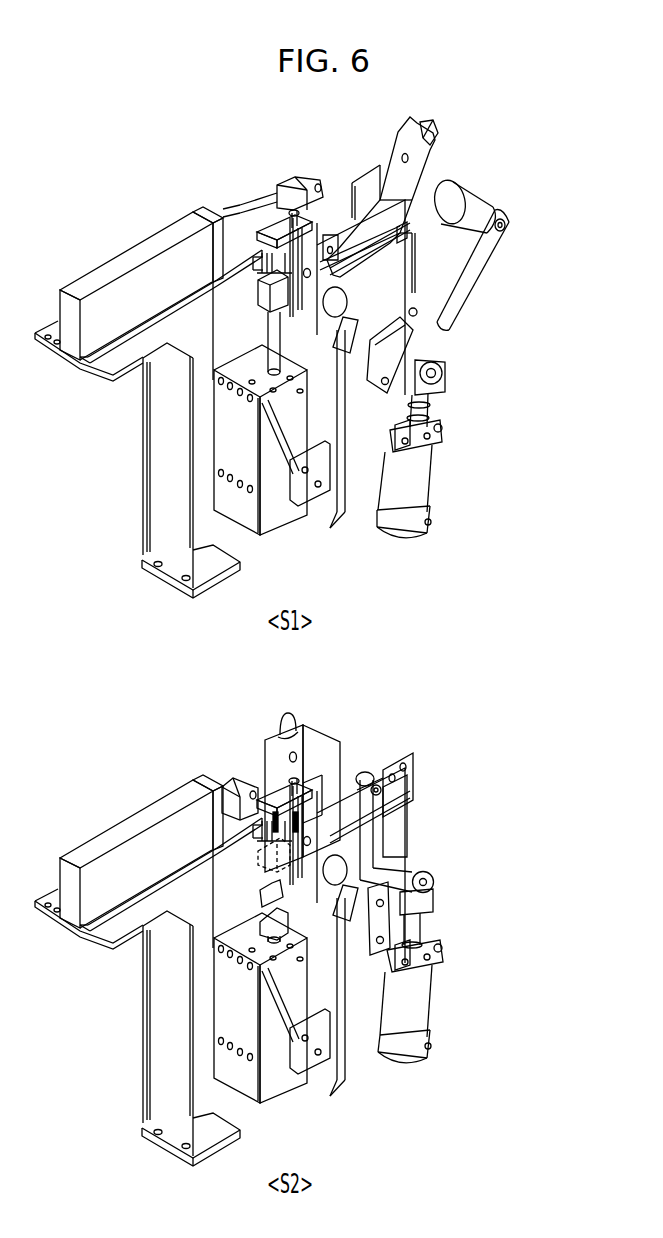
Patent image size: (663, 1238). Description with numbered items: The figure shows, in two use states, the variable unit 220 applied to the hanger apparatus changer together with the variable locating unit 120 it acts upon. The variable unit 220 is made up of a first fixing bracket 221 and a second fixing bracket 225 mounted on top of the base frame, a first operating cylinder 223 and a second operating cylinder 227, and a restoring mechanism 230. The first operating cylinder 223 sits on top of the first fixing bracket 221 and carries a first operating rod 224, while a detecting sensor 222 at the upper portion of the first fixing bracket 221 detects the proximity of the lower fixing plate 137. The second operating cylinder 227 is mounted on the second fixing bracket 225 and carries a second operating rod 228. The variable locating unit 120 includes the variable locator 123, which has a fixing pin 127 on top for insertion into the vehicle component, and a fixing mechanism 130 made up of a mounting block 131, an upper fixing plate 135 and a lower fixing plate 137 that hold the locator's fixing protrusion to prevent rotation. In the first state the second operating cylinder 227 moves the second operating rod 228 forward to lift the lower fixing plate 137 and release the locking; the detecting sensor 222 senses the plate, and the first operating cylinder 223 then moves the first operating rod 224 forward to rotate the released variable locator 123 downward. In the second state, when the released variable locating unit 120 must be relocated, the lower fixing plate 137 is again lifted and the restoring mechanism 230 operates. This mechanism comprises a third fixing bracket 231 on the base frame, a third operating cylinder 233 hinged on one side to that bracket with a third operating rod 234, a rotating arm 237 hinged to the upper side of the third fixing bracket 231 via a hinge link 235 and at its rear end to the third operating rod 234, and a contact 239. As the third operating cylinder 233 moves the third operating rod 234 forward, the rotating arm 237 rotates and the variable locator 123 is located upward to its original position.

The variable unit 220 is at (203, 144).
The first operating cylinder 223 is at (97, 316).
The detecting sensor 222 is at (262, 283).
The first fixing bracket 221 is at (207, 433).
The second fixing bracket 225 is at (277, 507).
The second operating cylinder 227 is at (290, 443).
The third fixing bracket 231 is at (353, 487).
The mounting block 131 is at (268, 240).
The upper fixing plate 135 is at (278, 215).
The first operating rod 224 is at (253, 213).
The fixing mechanism 130 is at (314, 210).
The lower fixing plate 137 is at (258, 258).
The second operating rod 228 is at (262, 372).
The variable locating unit 120 is at (426, 93).
The variable locator 123 is at (410, 177).
The fixing pin 127 is at (430, 123).
The contact 239 is at (470, 202).
The restoring mechanism 230 is at (478, 280).
The rotating arm 237 is at (433, 323).
The hinge link 235 is at (400, 358).
The third operating rod 234 is at (430, 402).
The third operating cylinder 233 is at (423, 457).